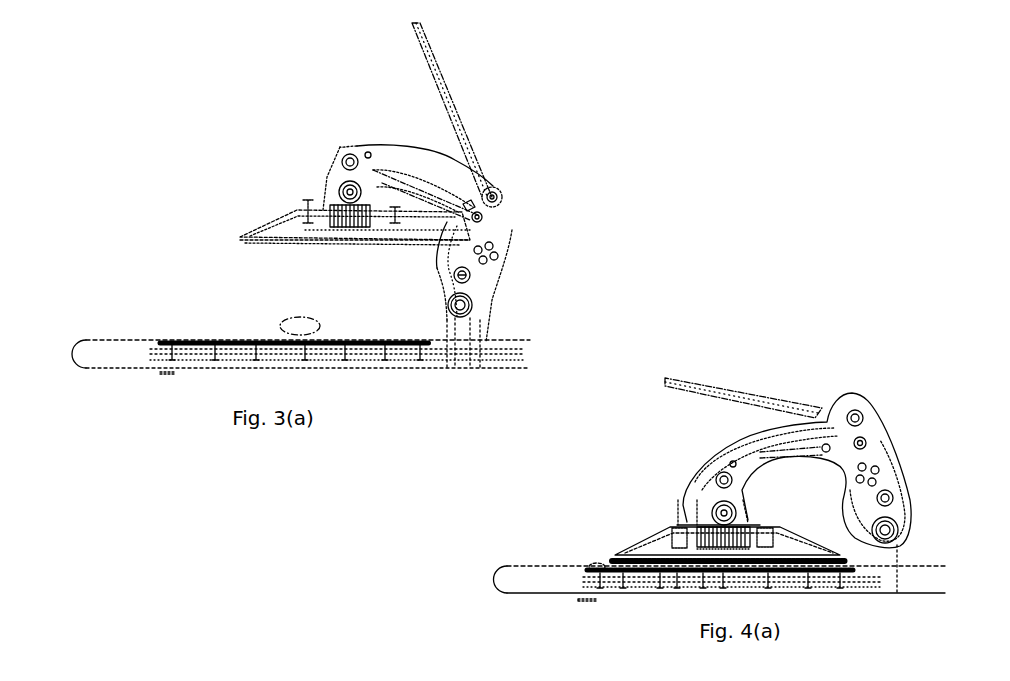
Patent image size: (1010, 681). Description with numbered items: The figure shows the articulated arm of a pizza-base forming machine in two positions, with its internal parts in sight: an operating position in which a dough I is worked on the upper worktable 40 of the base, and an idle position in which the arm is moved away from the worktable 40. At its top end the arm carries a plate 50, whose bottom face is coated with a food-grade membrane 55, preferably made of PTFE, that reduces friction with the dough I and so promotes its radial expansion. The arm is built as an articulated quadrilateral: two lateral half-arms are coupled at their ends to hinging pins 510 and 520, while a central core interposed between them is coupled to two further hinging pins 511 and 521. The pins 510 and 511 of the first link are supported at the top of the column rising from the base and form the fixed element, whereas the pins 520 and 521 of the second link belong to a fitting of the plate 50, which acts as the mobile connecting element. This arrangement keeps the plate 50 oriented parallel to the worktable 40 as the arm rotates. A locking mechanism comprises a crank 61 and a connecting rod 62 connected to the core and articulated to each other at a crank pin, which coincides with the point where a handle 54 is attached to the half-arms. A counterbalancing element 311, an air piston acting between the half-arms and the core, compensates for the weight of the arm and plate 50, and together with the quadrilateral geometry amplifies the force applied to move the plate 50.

In FIG. 3A, the upper worktable 40 is at (107, 341).
In FIG. 4A, the upper worktable 40 is at (533, 567).
In FIG. 3A, the plate 50 is at (262, 222).
In FIG. 4A, the plate 50 is at (655, 551).
In FIG. 3A, the food-grade membrane 55 is at (285, 242).
In FIG. 3A, the handle 54 is at (452, 104).
In FIG. 4A, the handle 54 is at (715, 390).
In FIG. 3A, the crank 61 is at (480, 210).
In FIG. 4A, the crank 61 is at (860, 433).
In FIG. 3A, the connecting rod 62 is at (480, 223).
In FIG. 4A, the connecting rod 62 is at (865, 457).
In FIG. 3A, the counterbalancing element 311 is at (407, 174).
In FIG. 3A, the hinging pin 510 is at (472, 314).
In FIG. 4A, the hinging pin 510 is at (900, 537).
In FIG. 3A, the hinging pin 511 is at (470, 277).
In FIG. 4A, the hinging pin 511 is at (878, 498).
In FIG. 4A, the hinging pin 520 is at (712, 513).
In FIG. 3A, the hinging pin 521 is at (344, 157).
In FIG. 4A, the hinging pin 521 is at (714, 480).
In FIG. 3A, the dough I is at (307, 330).
In FIG. 4A, the dough I is at (620, 563).